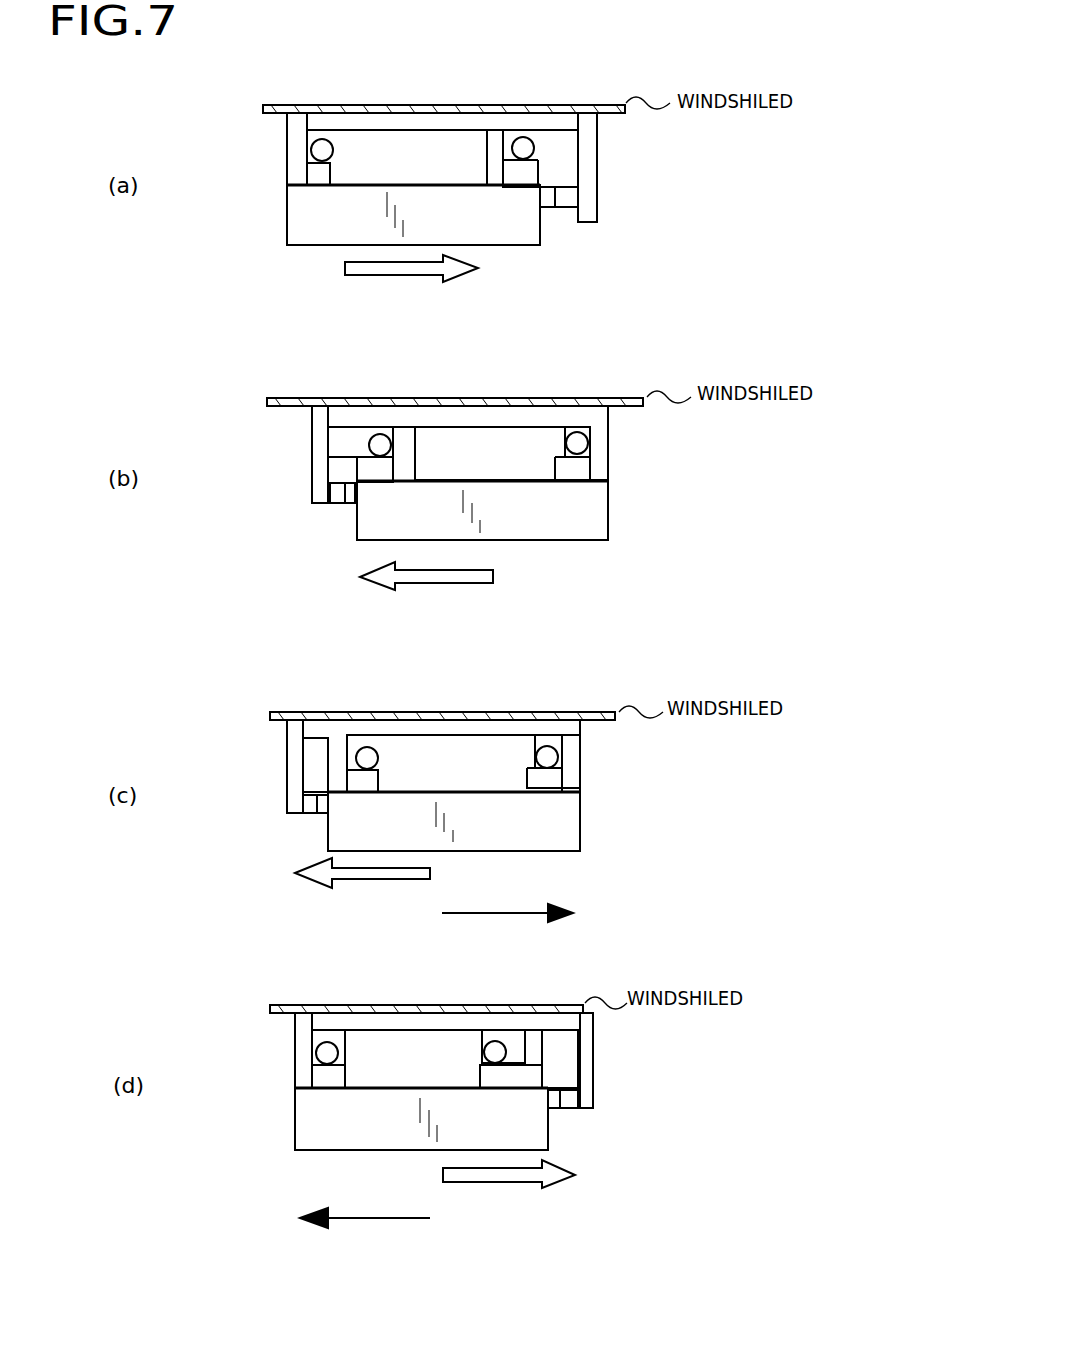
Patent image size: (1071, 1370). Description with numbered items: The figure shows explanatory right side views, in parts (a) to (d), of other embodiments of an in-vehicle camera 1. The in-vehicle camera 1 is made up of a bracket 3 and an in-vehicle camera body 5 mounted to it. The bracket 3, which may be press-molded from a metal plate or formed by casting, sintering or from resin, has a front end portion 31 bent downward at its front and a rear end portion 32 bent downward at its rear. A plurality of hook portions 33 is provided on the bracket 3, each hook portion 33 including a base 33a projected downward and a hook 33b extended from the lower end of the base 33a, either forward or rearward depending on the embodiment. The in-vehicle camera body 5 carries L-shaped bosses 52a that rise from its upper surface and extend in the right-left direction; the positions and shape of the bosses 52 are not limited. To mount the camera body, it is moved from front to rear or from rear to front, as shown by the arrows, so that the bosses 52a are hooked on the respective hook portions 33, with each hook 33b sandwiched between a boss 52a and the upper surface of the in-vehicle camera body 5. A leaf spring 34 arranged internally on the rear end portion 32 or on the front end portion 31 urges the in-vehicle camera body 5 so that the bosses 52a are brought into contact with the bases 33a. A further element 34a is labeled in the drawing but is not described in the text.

The in-vehicle camera 1 is at (708, 155).
The bracket 3 is at (597, 221).
The in-vehicle camera body 5 is at (540, 245).
The front end portion 31 is at (315, 445).
The rear end portion 32 is at (597, 172).
The hook portion 33 is at (485, 183).
The base 33a is at (487, 147).
The hook 33b is at (331, 170).
The leaf spring 34 is at (563, 202).
The side wall 34a is at (297, 140).
The bosses 52 is at (510, 228).
The boss 52a is at (322, 139).